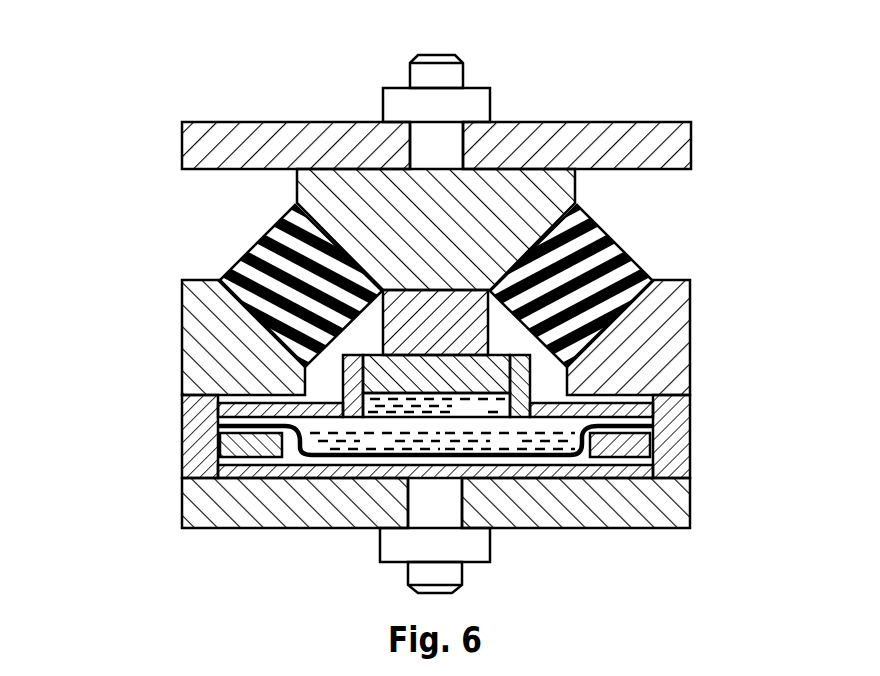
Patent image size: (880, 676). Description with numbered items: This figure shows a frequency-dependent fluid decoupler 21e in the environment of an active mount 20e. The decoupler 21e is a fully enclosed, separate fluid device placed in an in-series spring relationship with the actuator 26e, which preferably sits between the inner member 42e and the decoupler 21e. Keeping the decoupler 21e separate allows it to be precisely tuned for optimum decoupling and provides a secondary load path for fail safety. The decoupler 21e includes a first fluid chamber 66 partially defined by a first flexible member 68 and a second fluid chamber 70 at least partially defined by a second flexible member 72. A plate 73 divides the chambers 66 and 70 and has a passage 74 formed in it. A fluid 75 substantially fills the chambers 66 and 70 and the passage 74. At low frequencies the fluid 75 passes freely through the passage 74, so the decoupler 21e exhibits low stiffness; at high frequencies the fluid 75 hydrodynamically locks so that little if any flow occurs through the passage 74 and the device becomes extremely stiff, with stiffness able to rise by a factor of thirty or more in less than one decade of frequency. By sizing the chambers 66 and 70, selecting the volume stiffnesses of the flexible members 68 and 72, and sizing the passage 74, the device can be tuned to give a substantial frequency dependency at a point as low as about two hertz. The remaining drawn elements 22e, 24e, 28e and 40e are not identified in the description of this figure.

The mount 20e is at (160, 320).
The decoupler 21e is at (352, 437).
The upper mounting plate 22e is at (691, 149).
The lower mounting plate 24e is at (690, 492).
The actuator 26e is at (458, 293).
The elastomeric wedge element 28e is at (613, 231).
The housing 40e is at (491, 441).
The inner member 42e is at (297, 193).
The first fluid chamber 66 is at (436, 405).
The first flexible member 68 is at (363, 355).
The second fluid chamber 70 is at (510, 438).
The second flexible member 72 is at (548, 460).
The plate 73 is at (222, 407).
The passage 74 is at (375, 437).
The fluid 75 is at (500, 460).